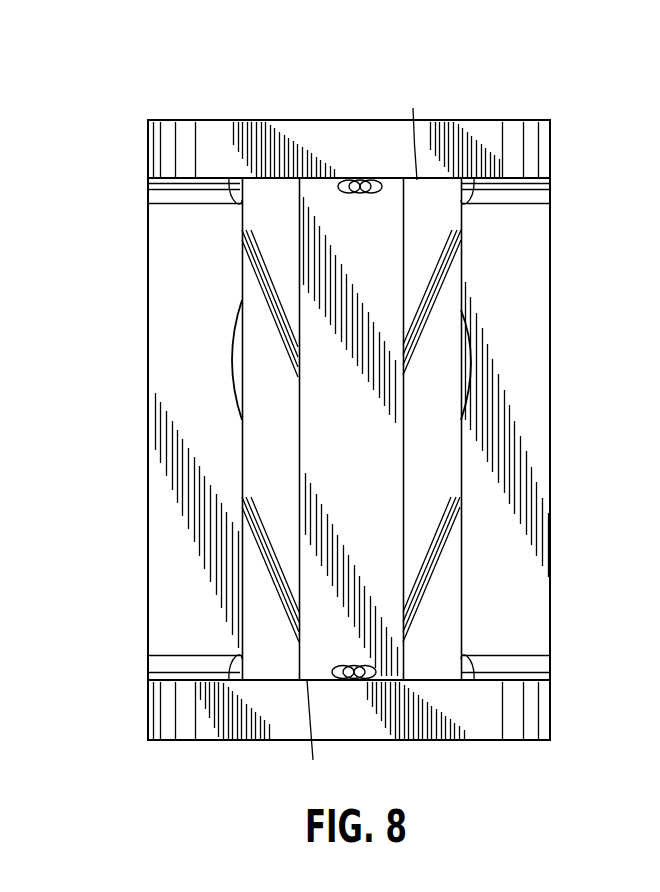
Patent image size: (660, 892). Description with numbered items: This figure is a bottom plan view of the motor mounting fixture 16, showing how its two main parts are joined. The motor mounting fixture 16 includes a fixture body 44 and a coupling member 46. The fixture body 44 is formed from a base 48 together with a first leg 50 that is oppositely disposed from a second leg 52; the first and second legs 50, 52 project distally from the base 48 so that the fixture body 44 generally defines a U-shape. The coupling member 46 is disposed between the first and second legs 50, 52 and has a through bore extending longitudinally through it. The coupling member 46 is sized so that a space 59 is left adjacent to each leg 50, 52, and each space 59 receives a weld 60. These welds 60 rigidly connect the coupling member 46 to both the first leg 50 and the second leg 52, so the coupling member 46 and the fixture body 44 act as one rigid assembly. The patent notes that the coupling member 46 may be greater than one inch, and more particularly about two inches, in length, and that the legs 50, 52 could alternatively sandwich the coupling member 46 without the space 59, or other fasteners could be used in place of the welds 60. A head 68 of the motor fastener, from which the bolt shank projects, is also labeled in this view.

The motor mounting fixture 16 is at (146, 90).
The fixture body 44 is at (146, 330).
The coupling member 46 is at (368, 453).
The base 48 is at (216, 283).
The first leg 50 is at (528, 156).
The second leg 52 is at (528, 712).
The space 59 is at (363, 434).
The weld 60 is at (350, 182).
The head 68 is at (468, 357).